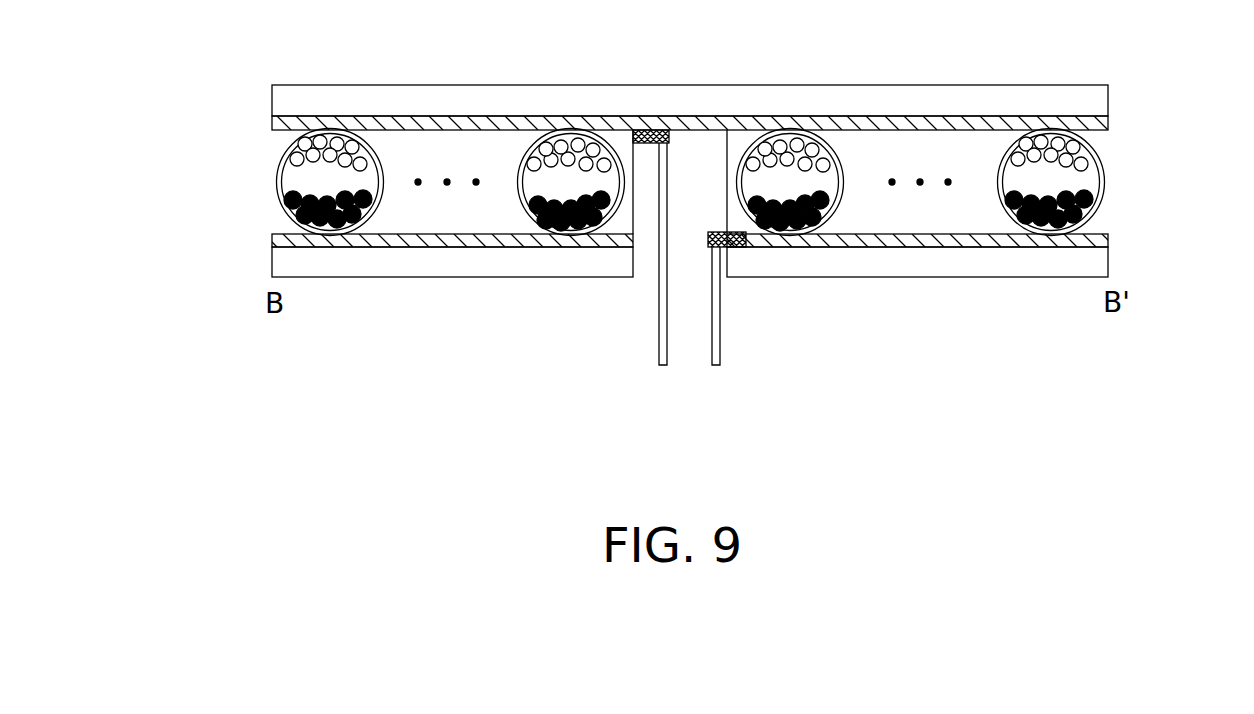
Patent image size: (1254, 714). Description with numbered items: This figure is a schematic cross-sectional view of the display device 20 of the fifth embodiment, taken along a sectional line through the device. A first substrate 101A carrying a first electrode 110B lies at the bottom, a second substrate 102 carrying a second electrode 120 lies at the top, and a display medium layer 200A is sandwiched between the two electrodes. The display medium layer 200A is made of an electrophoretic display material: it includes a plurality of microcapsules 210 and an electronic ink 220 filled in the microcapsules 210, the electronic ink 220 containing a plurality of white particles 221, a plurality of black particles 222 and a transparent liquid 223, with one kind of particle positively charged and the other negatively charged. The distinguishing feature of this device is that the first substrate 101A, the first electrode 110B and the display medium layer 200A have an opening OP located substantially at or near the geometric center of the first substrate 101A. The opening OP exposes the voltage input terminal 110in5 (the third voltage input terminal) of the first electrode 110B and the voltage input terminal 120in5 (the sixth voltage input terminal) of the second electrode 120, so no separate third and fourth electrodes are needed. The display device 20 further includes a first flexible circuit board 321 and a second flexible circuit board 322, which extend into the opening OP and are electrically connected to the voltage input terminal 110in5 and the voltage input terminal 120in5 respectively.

The display device 20 is at (670, 238).
The second substrate 102 is at (1060, 100).
The second electrode 120 is at (997, 121).
The voltage input terminal 120in5 is at (650, 130).
The voltage input terminal 110in5 is at (712, 232).
The first electrode 110B is at (1106, 239).
The first substrate 101A is at (1100, 261).
The flexible circuit board 322 is at (661, 368).
The flexible circuit board 321 is at (716, 368).
The opening OP is at (645, 283).
The display medium layer 200A is at (662, 177).
The microcapsule 210 is at (290, 146).
The electronic ink 220 is at (257, 183).
The white particles 221 is at (288, 160).
The transparent liquid 223 is at (293, 181).
The black particles 222 is at (284, 205).